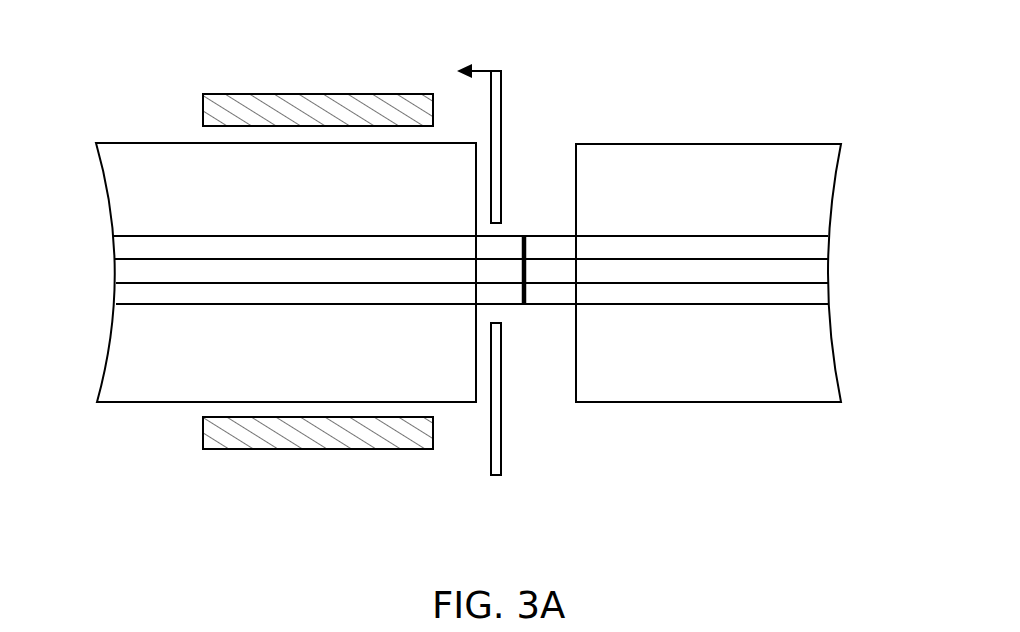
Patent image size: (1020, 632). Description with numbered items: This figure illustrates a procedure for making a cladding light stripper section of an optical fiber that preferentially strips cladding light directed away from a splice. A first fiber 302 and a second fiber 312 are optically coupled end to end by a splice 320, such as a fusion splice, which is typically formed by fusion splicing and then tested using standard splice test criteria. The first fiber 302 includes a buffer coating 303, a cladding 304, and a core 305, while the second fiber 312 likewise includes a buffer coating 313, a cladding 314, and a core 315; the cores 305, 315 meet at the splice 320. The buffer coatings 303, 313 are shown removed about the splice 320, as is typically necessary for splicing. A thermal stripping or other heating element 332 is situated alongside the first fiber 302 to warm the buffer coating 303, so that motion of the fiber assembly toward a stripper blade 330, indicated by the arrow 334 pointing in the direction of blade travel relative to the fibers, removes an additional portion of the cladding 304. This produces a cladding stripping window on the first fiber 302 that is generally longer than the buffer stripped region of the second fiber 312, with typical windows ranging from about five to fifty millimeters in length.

The first fiber 302 is at (128, 472).
The buffer coating 303 is at (286, 272).
The cladding 304 is at (117, 297).
The core 305 is at (115, 272).
The second fiber 312 is at (819, 439).
The buffer coating 313 is at (708, 273).
The cladding 314 is at (577, 290).
The core 315 is at (828, 275).
The splice 320 is at (525, 236).
The stripper blade 330 is at (501, 90).
The heating element 332 is at (278, 94).
The blade movement direction 334 is at (484, 70).